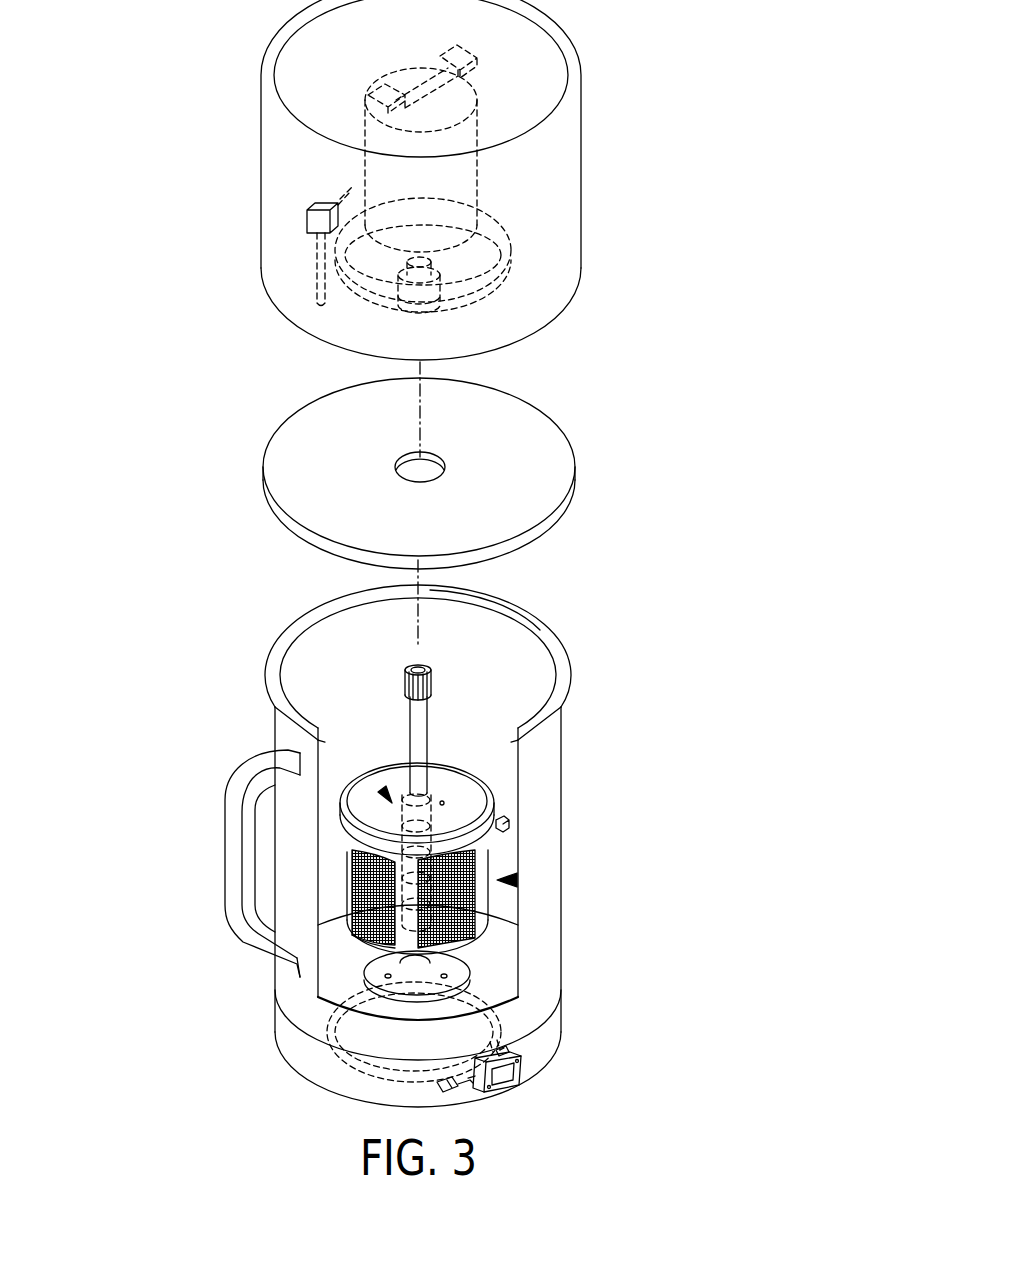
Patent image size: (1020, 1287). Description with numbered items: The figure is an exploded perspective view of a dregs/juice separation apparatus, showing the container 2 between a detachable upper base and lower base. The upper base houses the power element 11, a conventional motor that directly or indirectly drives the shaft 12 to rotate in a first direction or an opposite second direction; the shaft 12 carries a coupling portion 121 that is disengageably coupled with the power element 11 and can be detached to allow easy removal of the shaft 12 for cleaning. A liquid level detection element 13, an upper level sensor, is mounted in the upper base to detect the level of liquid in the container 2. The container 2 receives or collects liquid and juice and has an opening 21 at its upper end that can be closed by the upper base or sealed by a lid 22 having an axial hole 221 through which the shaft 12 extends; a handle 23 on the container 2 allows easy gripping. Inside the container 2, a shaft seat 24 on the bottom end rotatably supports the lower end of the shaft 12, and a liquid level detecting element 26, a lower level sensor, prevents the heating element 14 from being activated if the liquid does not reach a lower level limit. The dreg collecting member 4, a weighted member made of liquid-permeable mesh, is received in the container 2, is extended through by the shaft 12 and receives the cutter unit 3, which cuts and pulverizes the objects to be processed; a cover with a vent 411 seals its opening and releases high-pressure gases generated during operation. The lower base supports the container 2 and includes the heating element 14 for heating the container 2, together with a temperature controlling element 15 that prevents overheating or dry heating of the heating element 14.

The power element 11 is at (467, 175).
The liquid level detection element 13 is at (313, 268).
The coupling portion 121 is at (437, 310).
The lid 22 is at (553, 458).
The axial hole 221 is at (438, 467).
The container 2 is at (553, 757).
The opening 21 is at (533, 668).
The handle 23 is at (242, 778).
The shaft 12 is at (418, 723).
The cutter unit 3 is at (378, 782).
The dreg collecting member 4 is at (517, 880).
The vent 411 is at (444, 802).
The liquid level detecting element 26 is at (510, 826).
The shaft seat 24 is at (420, 964).
The heating element 14 is at (337, 1067).
The temperature controlling element 15 is at (457, 1092).